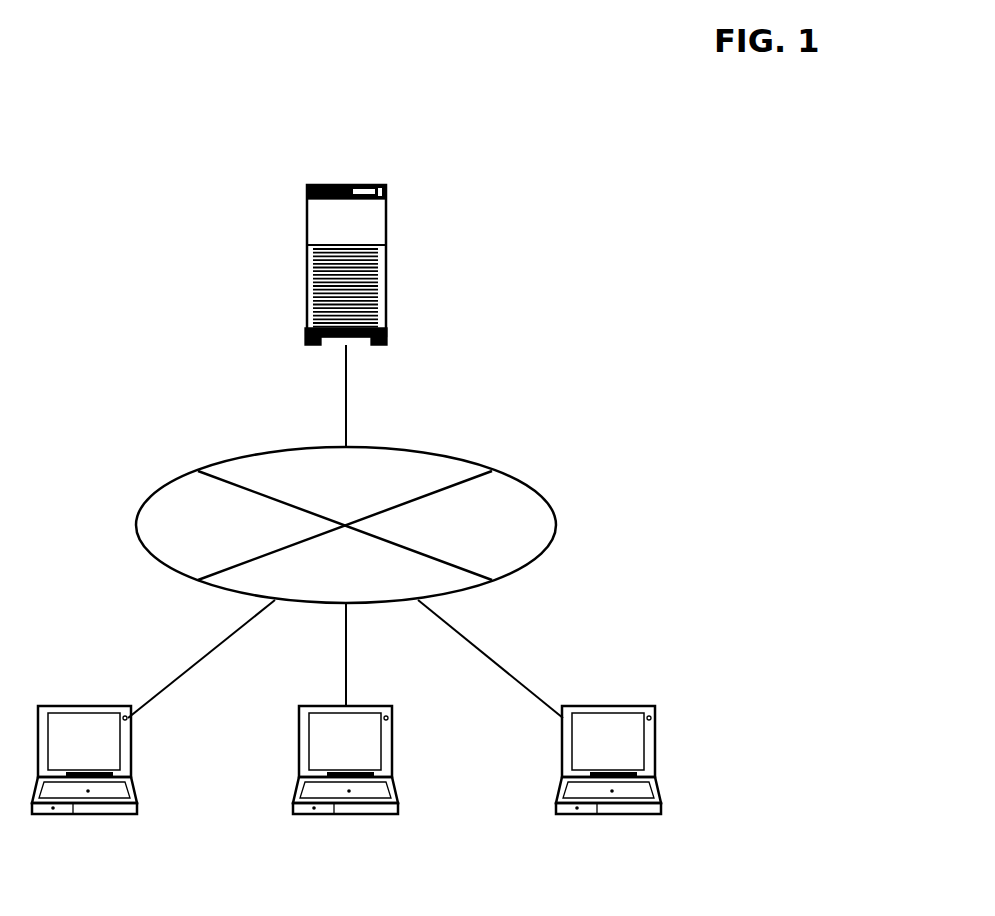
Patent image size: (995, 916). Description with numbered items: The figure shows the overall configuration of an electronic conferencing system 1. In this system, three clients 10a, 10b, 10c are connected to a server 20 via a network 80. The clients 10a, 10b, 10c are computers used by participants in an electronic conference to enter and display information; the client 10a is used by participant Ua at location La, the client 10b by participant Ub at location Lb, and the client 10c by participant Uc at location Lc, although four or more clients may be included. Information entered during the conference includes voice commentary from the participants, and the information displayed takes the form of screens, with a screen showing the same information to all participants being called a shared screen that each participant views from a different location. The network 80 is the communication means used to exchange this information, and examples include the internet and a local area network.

The electronic conferencing system 1 is at (607, 212).
The server 20 is at (334, 185).
The network 80 is at (502, 470).
The client 10a is at (53, 814).
The client 10b is at (316, 814).
The client 10c is at (579, 814).